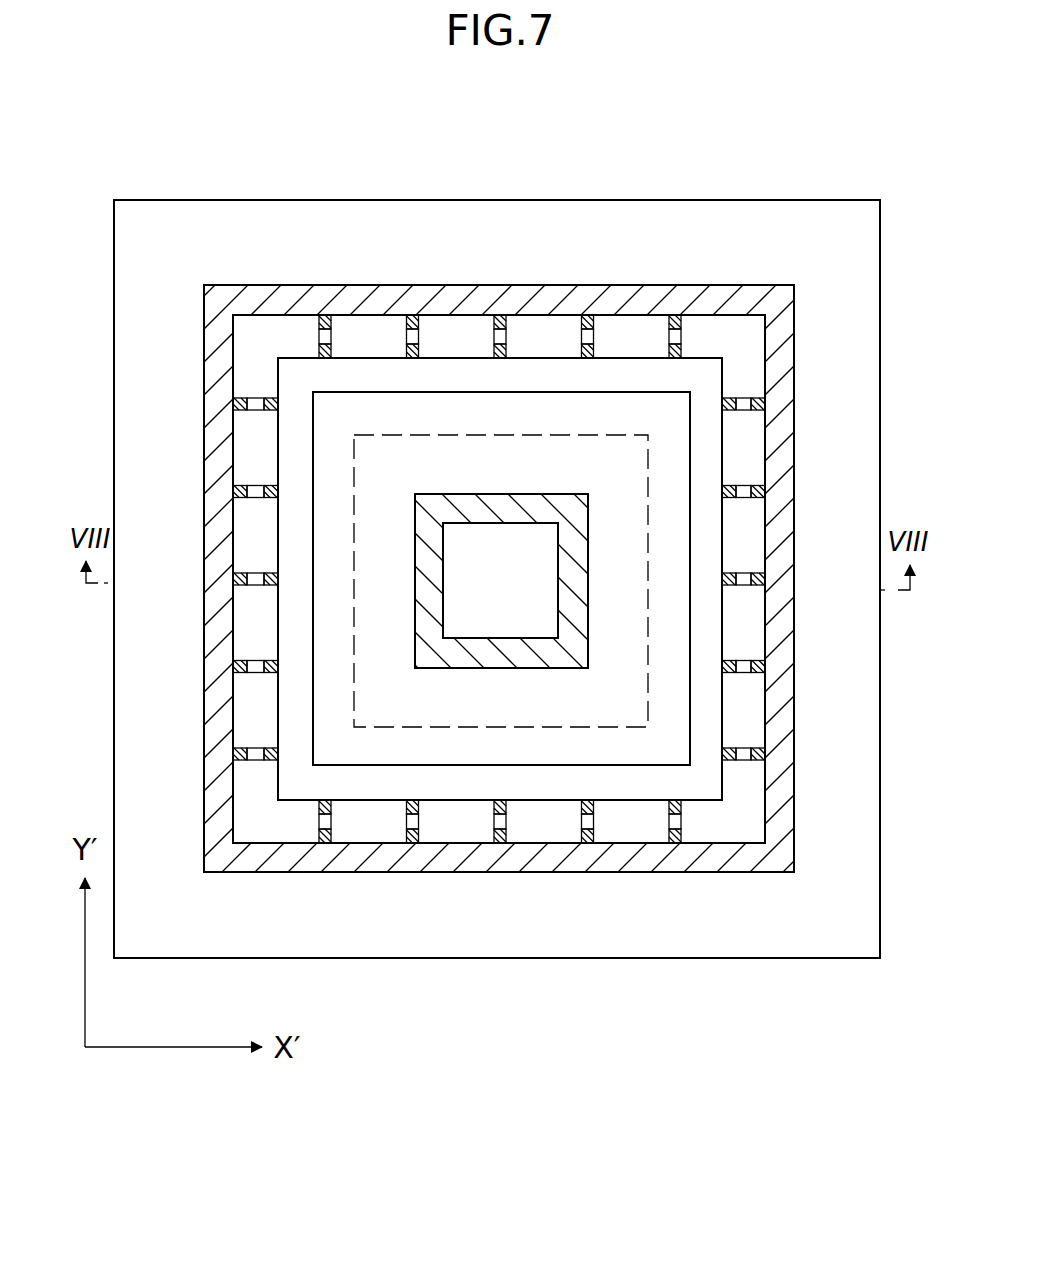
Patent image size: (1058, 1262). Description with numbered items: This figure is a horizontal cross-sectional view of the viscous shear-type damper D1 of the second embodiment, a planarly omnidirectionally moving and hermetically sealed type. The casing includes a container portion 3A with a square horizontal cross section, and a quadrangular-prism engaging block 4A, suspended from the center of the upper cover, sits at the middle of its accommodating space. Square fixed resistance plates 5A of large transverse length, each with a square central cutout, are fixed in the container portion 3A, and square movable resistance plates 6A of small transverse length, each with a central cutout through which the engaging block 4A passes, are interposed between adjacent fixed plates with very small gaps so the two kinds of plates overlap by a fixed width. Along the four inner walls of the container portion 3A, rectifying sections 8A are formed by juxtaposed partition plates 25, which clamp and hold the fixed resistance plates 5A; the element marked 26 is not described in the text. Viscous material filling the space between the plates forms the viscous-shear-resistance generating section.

The viscous shear-type damper D1 is at (725, 168).
The container portion 3A is at (797, 393).
The rectifying section 8A is at (743, 384).
The fixed resistance plate 5A is at (290, 523).
The movable resistance plate 6A is at (632, 480).
The engaging block 4A is at (467, 499).
The partition plate 25 is at (337, 326).
The supporting beam middle portions 26 is at (493, 337).